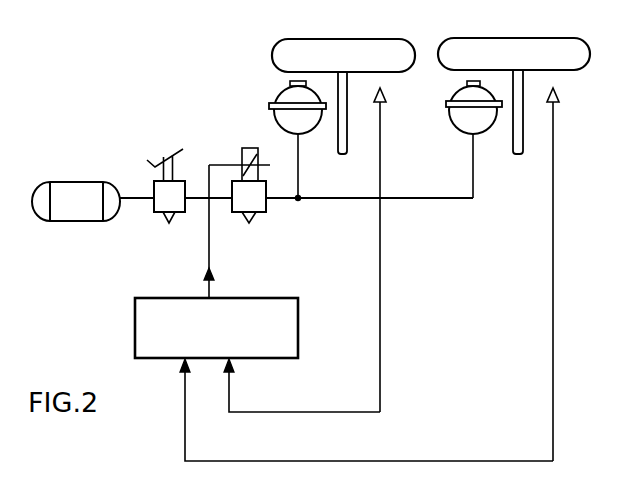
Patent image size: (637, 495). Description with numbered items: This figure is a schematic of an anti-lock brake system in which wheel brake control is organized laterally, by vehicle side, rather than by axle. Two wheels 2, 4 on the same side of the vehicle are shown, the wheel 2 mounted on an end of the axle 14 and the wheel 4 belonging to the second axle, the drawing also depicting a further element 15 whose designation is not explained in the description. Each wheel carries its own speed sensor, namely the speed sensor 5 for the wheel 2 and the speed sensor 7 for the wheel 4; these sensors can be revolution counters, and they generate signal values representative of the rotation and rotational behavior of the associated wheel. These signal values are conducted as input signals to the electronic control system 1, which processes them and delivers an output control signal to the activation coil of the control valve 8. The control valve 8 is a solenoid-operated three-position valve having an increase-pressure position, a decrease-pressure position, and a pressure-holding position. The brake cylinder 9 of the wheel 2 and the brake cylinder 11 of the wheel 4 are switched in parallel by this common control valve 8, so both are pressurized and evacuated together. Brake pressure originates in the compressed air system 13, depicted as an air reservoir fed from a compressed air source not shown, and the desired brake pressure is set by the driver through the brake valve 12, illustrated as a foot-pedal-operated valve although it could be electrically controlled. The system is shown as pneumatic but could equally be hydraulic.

The electronic control system 1 is at (187, 297).
The wheel 2 is at (529, 37).
The wheel 4 is at (356, 38).
The speed sensor 5 is at (560, 97).
The speed sensor 7 is at (388, 97).
The control valve 8 is at (267, 211).
The brake cylinder 9 is at (458, 124).
The brake cylinder 11 is at (284, 95).
The brake valve 12 is at (157, 212).
The compressed air system 13 is at (88, 181).
The axle 14 is at (512, 137).
The strut 15 is at (348, 136).